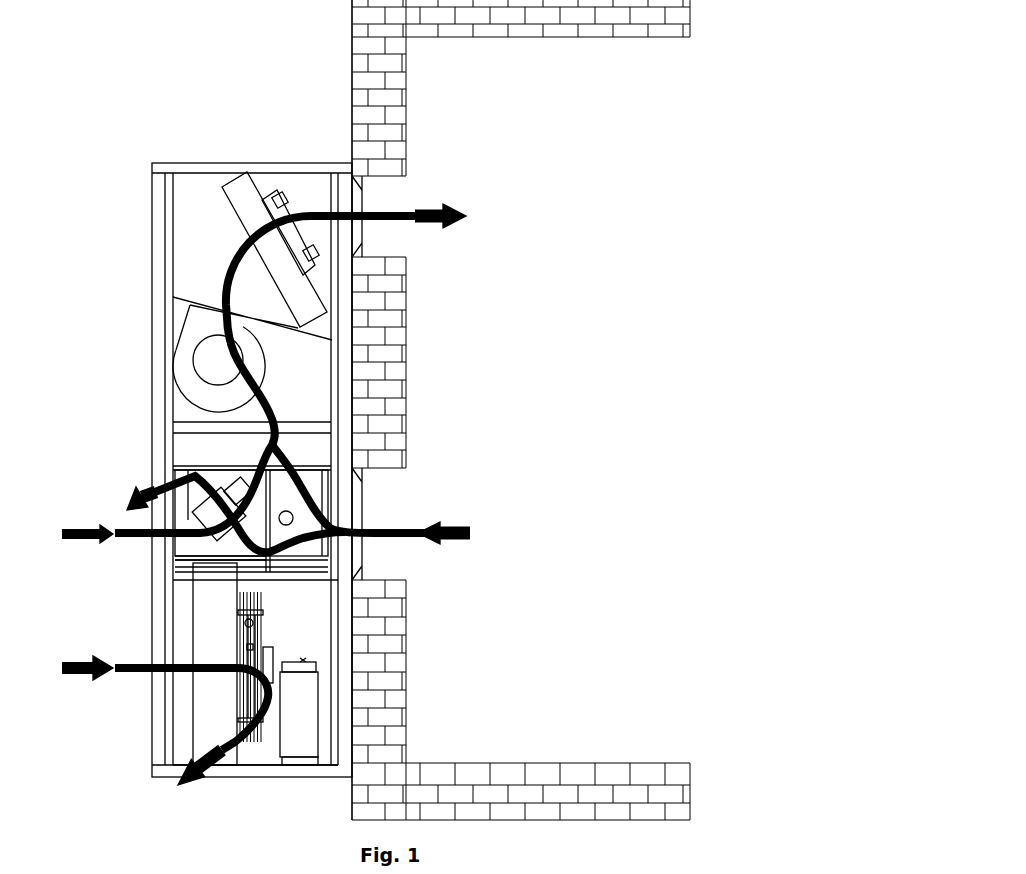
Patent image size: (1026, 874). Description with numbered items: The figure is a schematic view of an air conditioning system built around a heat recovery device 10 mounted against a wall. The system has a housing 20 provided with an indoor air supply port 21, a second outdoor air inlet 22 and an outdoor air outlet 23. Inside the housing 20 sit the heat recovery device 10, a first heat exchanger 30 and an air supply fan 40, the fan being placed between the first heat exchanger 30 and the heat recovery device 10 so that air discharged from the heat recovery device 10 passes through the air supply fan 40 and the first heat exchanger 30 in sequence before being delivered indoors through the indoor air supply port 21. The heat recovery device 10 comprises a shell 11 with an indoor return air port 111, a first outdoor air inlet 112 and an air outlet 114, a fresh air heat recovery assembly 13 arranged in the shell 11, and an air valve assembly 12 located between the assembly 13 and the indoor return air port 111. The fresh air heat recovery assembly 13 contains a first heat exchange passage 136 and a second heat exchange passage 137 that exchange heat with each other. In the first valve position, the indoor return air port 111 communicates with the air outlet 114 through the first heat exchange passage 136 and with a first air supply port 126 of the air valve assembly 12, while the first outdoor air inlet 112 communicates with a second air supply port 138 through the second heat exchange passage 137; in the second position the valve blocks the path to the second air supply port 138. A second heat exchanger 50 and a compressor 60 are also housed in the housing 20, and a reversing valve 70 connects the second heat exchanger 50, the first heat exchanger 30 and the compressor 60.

The heat recovery device 10 is at (325, 548).
The shell 11 is at (238, 560).
The air valve assembly 12 is at (312, 497).
The fresh air heat recovery assembly 13 is at (140, 492).
The housing 20 is at (160, 272).
The indoor air supply port 21 is at (362, 203).
The second outdoor air inlet 22 is at (147, 663).
The outdoor air outlet 23 is at (208, 770).
The first heat exchanger 30 is at (245, 215).
The air supply fan 40 is at (205, 363).
The second heat exchanger 50 is at (218, 713).
The compressor 60 is at (307, 725).
The reversing valve 70 is at (265, 610).
The indoor return air port 111 is at (362, 517).
The first outdoor air inlet 112 is at (133, 528).
The air outlet 114 is at (197, 510).
The first air supply port 126 is at (305, 478).
The first heat exchange passage 136 is at (298, 562).
The second heat exchange passage 137 is at (173, 541).
The second air supply port 138 is at (230, 478).